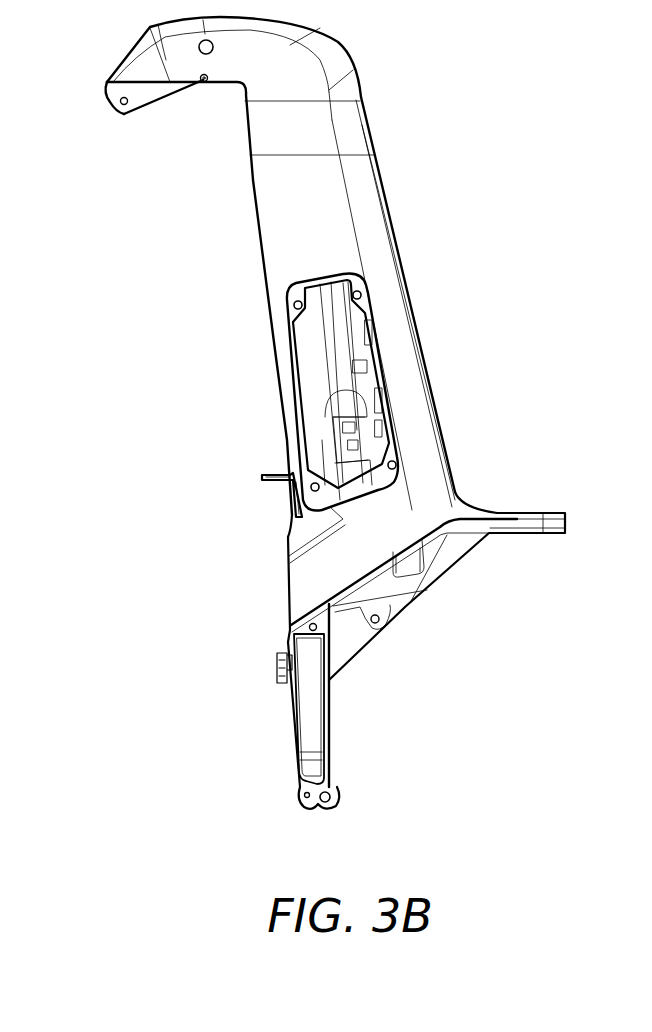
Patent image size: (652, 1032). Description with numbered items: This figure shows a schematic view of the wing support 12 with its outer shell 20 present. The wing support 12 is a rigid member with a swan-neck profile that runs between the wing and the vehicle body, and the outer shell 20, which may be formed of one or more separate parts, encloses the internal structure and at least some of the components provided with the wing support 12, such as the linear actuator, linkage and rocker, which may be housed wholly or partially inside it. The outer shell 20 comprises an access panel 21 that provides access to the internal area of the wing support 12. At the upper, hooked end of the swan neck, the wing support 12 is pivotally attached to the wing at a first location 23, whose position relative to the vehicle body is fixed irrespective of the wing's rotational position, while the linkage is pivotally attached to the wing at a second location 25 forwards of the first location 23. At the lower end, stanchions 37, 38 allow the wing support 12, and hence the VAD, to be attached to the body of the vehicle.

The wing support 12 is at (458, 270).
The outer shell 20 is at (334, 199).
The access panel 21 is at (358, 362).
The first location 23 is at (117, 110).
The second location 25 is at (163, 93).
The stanchion 37 is at (557, 522).
The stanchion 38 is at (323, 808).